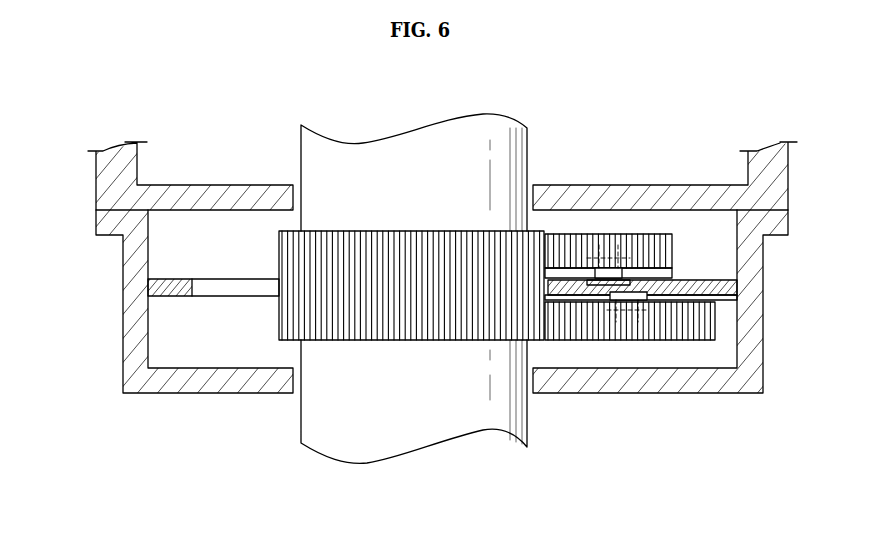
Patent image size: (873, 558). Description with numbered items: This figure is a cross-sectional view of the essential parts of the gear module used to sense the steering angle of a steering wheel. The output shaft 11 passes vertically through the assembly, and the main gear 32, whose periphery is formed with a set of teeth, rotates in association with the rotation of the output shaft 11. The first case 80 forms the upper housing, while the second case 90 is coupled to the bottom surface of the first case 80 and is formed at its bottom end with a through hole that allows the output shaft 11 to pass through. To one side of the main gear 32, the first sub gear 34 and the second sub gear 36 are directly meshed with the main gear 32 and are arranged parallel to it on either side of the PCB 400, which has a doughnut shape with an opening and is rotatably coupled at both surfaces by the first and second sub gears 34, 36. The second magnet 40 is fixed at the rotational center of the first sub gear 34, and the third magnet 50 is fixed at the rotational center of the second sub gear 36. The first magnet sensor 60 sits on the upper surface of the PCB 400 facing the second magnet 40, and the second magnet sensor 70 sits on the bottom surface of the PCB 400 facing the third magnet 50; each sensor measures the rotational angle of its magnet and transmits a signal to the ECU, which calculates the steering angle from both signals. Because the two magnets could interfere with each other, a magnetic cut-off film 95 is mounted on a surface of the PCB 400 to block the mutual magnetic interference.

The output shaft 11 is at (402, 438).
The main gear 32 is at (287, 229).
The first sub gear 34 is at (570, 232).
The second sub gear 36 is at (558, 333).
The second magnet 40 is at (603, 250).
The third magnet 50 is at (638, 313).
The first magnet sensor 60 is at (667, 279).
The second magnet sensor 70 is at (680, 293).
The first case 80 is at (88, 177).
The second case 90 is at (107, 364).
The magnetic cut-off film 95 is at (460, 297).
The PCB 400 is at (157, 283).